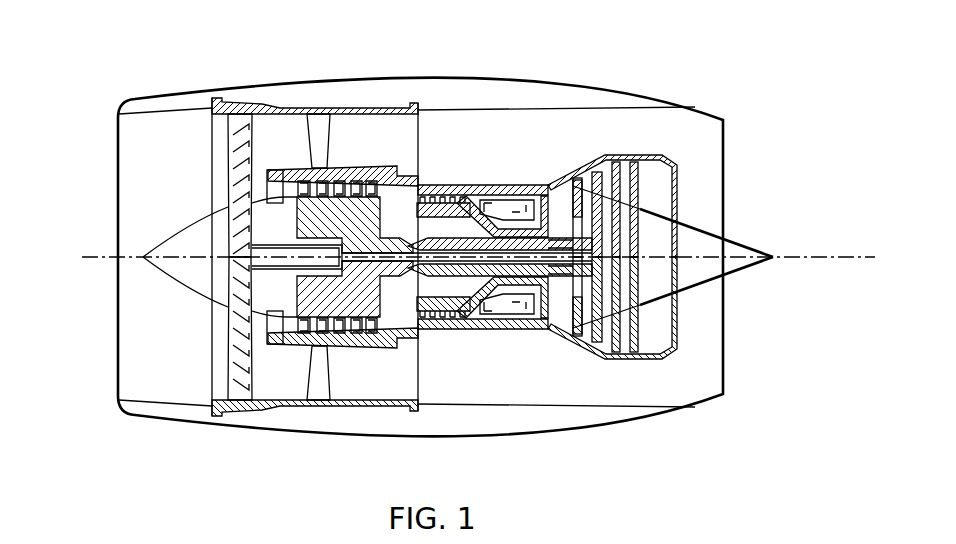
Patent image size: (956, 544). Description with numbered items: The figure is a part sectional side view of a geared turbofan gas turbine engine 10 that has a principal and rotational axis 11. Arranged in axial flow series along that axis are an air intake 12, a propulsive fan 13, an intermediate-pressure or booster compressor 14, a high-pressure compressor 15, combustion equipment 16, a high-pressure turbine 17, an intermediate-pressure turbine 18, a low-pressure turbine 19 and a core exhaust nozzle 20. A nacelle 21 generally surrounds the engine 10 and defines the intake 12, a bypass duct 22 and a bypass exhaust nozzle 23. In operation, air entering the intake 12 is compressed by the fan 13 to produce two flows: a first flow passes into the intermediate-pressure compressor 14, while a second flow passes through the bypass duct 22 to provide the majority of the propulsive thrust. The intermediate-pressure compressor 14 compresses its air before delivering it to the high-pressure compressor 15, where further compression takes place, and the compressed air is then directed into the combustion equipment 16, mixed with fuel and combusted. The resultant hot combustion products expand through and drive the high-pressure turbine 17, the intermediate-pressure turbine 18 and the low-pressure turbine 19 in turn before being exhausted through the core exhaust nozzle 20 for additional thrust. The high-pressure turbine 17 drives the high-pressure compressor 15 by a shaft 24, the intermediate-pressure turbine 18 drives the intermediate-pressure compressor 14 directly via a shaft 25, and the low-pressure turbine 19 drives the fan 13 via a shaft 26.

The turbofan gas turbine engine 10 is at (137, 83).
The principal and rotational axis 11 is at (133, 256).
The air intake 12 is at (177, 112).
The propulsive fan 13 is at (230, 357).
The intermediate-pressure compressor 14 is at (305, 343).
The high-pressure compressor 15 is at (437, 312).
The combustion equipment 16 is at (510, 318).
The high-pressure turbine 17 is at (541, 187).
The intermediate-pressure turbine 18 is at (578, 178).
The low-pressure turbine 19 is at (585, 333).
The core exhaust nozzle 20 is at (660, 317).
The nacelle 21 is at (562, 79).
The bypass duct 22 is at (388, 153).
The bypass exhaust nozzle 23 is at (660, 387).
The shaft 24 is at (503, 226).
The shaft 25 is at (404, 268).
The shaft 26 is at (326, 262).